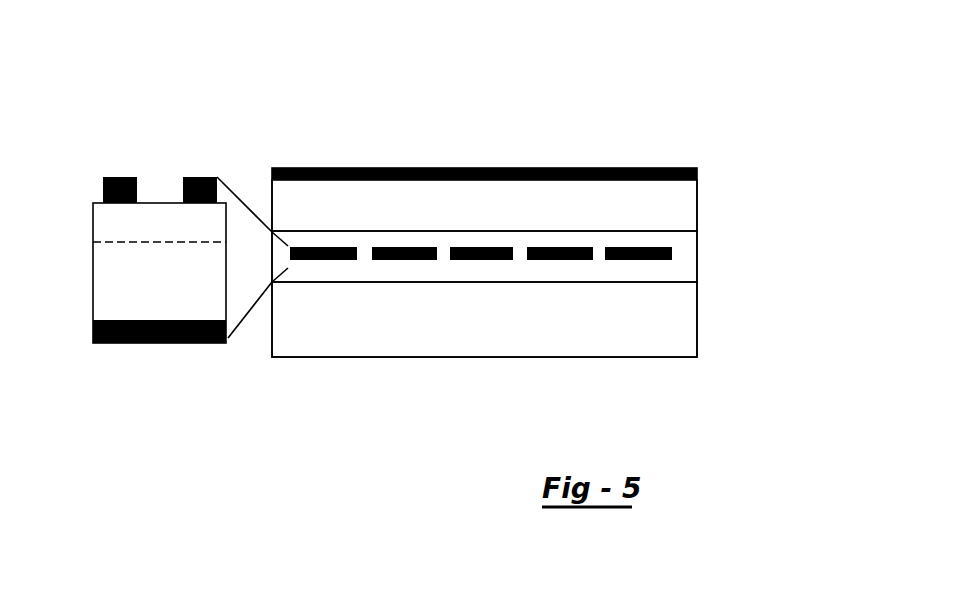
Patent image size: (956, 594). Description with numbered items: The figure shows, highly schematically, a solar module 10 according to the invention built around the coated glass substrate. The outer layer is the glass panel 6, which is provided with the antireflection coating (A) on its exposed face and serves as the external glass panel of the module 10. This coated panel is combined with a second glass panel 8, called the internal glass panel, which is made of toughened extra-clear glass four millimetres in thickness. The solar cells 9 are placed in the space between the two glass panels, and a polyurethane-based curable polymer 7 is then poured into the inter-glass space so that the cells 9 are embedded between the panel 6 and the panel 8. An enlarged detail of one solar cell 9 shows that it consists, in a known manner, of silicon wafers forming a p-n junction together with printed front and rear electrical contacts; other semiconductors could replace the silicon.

The glass panel 6 is at (484, 205).
The polyurethane-based curable polymer 7 is at (695, 245).
The internal glass panel 8 is at (484, 319).
The solar cell 9 is at (159, 260).
The solar module 10 is at (560, 127).
The antireflection coating A is at (690, 177).